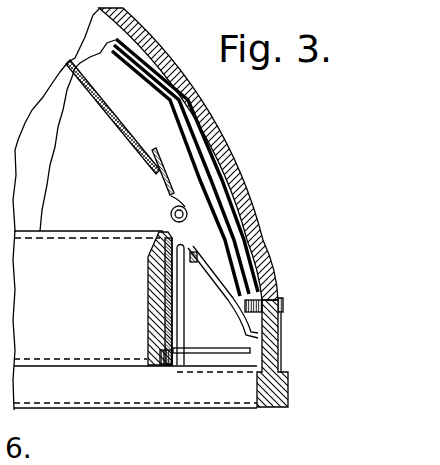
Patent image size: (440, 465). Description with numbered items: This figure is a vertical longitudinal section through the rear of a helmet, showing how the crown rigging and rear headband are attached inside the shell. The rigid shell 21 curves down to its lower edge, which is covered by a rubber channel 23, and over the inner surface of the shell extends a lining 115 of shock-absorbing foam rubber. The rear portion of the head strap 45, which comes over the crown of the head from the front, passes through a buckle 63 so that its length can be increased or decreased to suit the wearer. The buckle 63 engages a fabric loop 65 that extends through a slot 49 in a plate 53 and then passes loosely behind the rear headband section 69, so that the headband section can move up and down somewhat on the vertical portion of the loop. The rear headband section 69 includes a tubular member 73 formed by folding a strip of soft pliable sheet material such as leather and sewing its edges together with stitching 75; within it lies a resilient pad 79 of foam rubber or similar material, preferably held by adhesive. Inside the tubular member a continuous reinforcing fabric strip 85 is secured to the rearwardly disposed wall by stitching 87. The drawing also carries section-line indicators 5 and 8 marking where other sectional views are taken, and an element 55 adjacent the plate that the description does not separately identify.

The lining 115 is at (200, 100).
The rigid shell 21 is at (215, 122).
The head strap 45 is at (132, 137).
The buckle 63 is at (176, 201).
The rear headband section 69 is at (153, 322).
The stitching 75 is at (70, 231).
The resilient pad 79 is at (157, 283).
The tubular member 73 is at (147, 331).
The stitching 87 is at (177, 257).
The reinforcing fabric strip 85 is at (160, 364).
The plate 53 is at (256, 300).
The seal lip 55 is at (283, 303).
The rubber channel 23 is at (290, 398).
The slot 49 is at (255, 333).
The fabric loop 65 is at (205, 356).
The section line 8- 8 is at (238, 232).
The section line 5- 5 is at (123, 62).